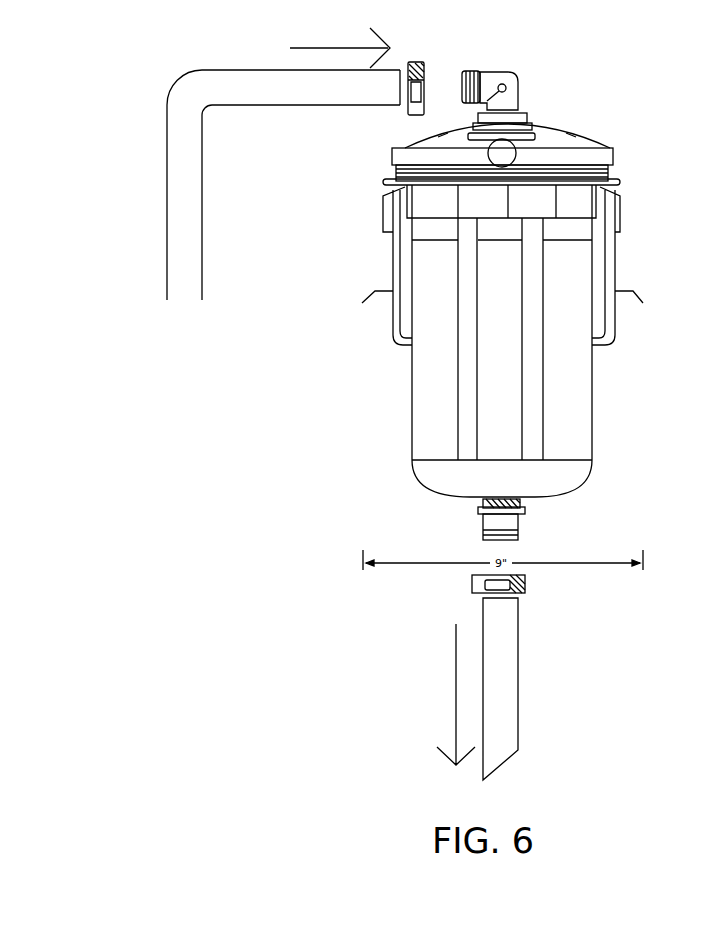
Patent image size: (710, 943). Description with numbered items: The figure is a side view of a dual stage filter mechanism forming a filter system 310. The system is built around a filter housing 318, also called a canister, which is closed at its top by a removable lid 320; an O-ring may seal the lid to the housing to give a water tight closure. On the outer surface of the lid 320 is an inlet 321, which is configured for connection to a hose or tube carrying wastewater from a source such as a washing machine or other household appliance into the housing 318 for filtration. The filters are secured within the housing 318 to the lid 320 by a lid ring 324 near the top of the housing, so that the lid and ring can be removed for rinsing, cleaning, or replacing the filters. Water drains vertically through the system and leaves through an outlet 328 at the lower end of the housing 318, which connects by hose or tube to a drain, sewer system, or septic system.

The filter system 310 is at (402, 445).
The filter housing 318 is at (592, 405).
The removable lid 320 is at (583, 133).
The inlet 321 is at (447, 83).
The lid ring 324 is at (603, 178).
The outlet 328 is at (522, 528).